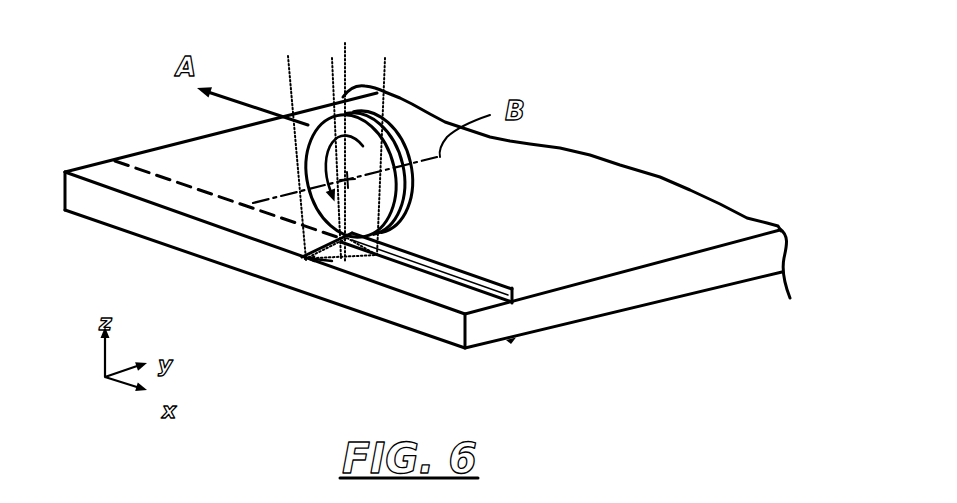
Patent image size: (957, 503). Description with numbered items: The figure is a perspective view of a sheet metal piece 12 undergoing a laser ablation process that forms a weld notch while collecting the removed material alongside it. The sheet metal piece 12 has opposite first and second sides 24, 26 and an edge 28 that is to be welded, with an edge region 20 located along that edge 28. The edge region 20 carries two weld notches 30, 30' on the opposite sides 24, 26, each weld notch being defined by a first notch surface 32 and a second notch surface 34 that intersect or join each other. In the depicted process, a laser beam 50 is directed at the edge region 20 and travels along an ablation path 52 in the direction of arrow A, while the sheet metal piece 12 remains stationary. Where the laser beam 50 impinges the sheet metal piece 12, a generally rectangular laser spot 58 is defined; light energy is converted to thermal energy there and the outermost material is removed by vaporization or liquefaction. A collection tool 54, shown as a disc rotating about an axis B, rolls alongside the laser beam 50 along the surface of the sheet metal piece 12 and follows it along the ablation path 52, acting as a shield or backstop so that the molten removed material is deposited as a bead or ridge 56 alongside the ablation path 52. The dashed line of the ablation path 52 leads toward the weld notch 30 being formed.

The sheet metal piece 12 is at (647, 115).
The edge region 20 is at (528, 353).
The first side 24 is at (403, 122).
The second side 26 is at (620, 313).
The edge 28 is at (78, 194).
The weld notch 30 is at (510, 273).
The weld notch 30' is at (489, 372).
The first notch surface 32 is at (457, 275).
The second notch surface 34 is at (431, 290).
The laser beam 50 is at (290, 76).
The ablation path 52 is at (157, 175).
The collection tool 54 is at (300, 193).
The bead or ridge 56 is at (407, 253).
The laser spot 58 is at (302, 262).